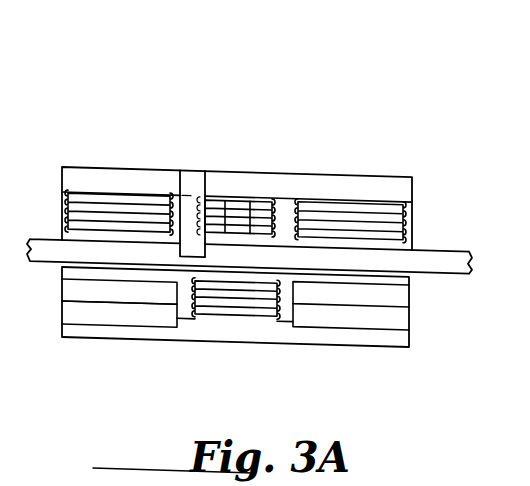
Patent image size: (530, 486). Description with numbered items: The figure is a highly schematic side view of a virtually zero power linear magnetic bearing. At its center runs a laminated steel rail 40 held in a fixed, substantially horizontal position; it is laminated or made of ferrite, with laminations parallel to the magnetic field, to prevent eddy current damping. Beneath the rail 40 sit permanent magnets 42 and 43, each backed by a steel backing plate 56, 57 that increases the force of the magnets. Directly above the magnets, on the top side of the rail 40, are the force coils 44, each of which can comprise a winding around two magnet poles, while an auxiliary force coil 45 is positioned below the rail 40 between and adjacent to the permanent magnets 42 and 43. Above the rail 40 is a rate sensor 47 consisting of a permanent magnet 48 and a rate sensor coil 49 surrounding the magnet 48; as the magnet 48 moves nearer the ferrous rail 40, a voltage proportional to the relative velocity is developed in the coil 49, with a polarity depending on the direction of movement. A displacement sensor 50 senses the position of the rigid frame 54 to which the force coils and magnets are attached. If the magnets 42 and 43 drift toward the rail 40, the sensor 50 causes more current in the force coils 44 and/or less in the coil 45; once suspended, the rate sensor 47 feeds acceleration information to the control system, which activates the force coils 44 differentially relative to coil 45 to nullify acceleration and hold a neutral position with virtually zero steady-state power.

The laminated steel rail 40 is at (42, 246).
The permanent magnet 42 is at (123, 290).
The permanent magnet 43 is at (403, 287).
The force coils 44 is at (115, 196).
The auxiliary force coil 45 is at (243, 310).
The rate sensor 47 is at (272, 182).
The permanent magnet 48 is at (237, 202).
The rate sensor coil 49 is at (258, 196).
The displacement sensor 50 is at (191, 160).
The rigid frame 54 is at (412, 180).
The steel backing plate 56 is at (153, 314).
The steel backing plate 57 is at (375, 313).